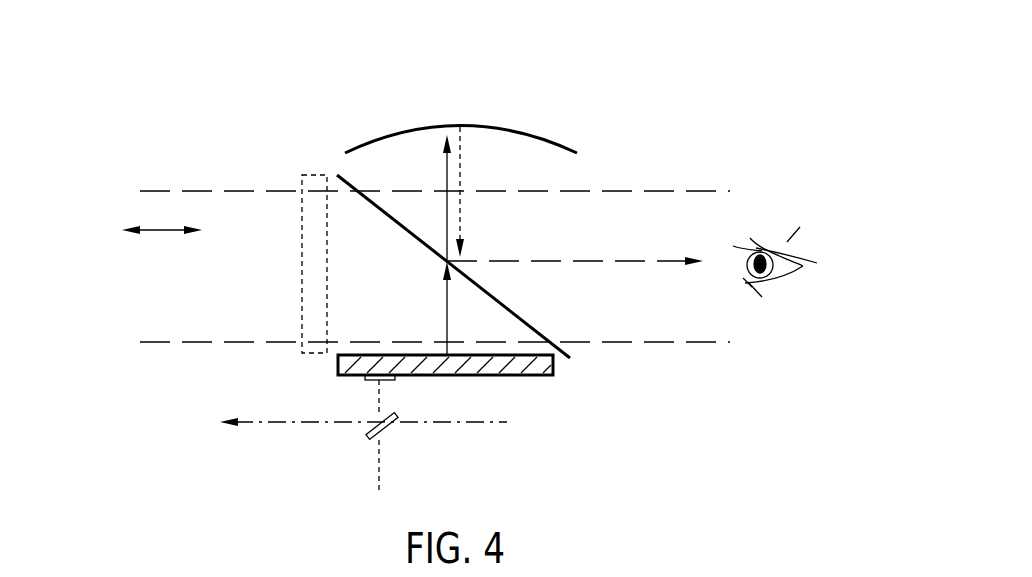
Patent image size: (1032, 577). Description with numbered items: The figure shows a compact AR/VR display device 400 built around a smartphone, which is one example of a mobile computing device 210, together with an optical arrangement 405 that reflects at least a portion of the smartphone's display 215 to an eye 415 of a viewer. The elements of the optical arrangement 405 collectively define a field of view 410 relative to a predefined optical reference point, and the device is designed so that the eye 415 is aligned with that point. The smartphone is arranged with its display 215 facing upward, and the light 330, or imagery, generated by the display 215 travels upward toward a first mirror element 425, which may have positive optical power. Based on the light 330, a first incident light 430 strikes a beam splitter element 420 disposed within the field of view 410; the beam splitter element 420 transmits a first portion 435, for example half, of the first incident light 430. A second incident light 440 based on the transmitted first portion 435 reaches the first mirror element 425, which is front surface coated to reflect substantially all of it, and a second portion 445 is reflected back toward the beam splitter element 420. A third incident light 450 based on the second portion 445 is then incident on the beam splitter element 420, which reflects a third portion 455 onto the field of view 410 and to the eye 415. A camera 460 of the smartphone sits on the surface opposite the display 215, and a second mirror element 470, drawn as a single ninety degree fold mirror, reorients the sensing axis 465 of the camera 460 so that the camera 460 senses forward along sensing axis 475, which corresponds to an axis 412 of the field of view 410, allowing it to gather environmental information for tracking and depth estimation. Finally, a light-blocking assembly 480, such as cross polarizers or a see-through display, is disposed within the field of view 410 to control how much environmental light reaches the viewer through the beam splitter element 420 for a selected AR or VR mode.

The compact AR/VR display device 400 is at (777, 72).
The optical arrangement 405 is at (601, 129).
The field of view 410 is at (680, 210).
The axis of the field of view 412 is at (160, 228).
The eye 415 is at (783, 248).
The beam splitter element 420 is at (572, 358).
The first mirror element 425 is at (358, 148).
The first incident light 430 is at (445, 260).
The first portion 435 is at (443, 256).
The second incident light 440 is at (440, 148).
The second portion 445 is at (463, 127).
The third incident light 450 is at (478, 245).
The third portion 455 is at (475, 262).
The camera 460 is at (365, 378).
The sensing axis 465 is at (382, 478).
The second mirror element 470 is at (400, 416).
The sensing axis 475 is at (251, 430).
The light-blocking assembly 480 is at (310, 175).
The mobile computing device 210 is at (534, 375).
The display 215 is at (404, 342).
The light 330 is at (445, 353).